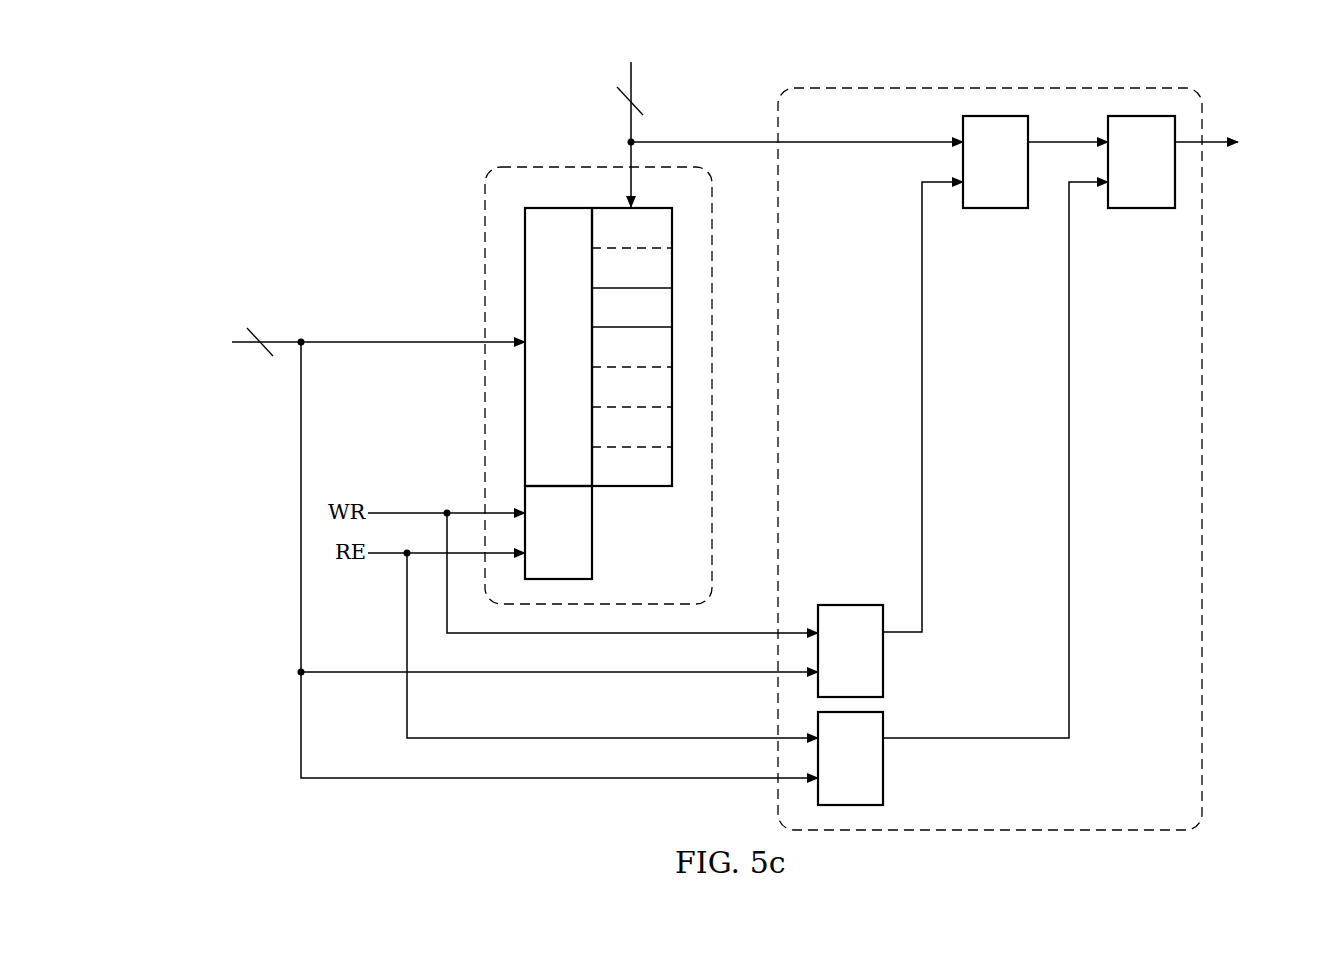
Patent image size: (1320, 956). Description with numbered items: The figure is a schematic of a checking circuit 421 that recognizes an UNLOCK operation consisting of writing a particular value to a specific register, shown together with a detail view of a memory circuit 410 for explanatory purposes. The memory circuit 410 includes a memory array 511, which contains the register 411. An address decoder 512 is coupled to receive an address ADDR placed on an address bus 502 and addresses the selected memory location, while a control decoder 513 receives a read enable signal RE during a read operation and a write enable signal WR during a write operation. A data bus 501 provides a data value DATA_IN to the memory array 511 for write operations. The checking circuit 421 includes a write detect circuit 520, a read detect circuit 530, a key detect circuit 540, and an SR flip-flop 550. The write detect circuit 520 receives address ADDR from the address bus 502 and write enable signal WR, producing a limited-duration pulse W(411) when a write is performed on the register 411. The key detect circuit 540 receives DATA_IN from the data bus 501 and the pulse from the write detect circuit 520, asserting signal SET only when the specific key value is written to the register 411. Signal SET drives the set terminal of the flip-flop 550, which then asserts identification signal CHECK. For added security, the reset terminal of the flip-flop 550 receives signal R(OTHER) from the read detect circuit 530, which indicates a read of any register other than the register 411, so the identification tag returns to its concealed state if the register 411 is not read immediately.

The memory circuit 410 is at (552, 165).
The checking circuit 421 is at (948, 87).
The data bus 501 is at (622, 134).
The address bus 502 is at (406, 340).
The memory array 511 is at (615, 487).
The address decoder 512 is at (558, 347).
The control decoder 513 is at (558, 532).
The register 411 is at (632, 307).
The write detect circuit 520 is at (901, 439).
The read detect circuit 530 is at (963, 501).
The key detect circuit 540 is at (1035, 162).
The SR flip-flop 550 is at (1214, 162).